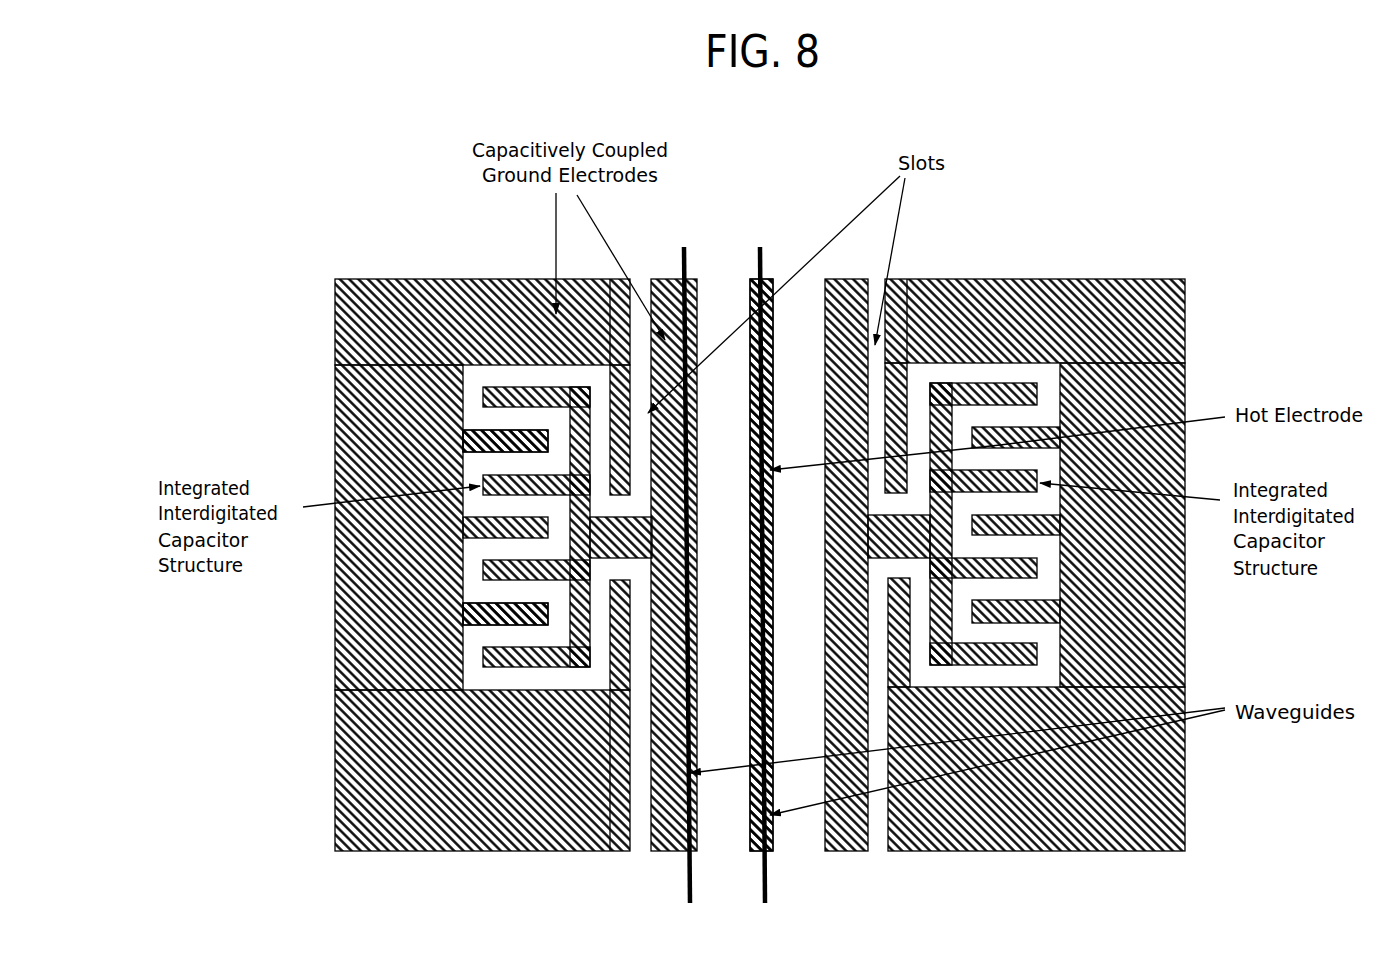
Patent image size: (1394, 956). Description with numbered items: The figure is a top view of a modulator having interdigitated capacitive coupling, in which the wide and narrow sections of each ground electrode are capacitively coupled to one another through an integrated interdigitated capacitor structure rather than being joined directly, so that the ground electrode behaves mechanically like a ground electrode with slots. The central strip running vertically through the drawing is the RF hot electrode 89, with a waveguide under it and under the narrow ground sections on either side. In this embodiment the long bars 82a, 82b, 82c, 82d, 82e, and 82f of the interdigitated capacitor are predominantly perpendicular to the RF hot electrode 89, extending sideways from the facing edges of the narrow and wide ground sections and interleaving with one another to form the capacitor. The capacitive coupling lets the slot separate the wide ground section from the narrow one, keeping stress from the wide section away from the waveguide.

The long bar 82a is at (495, 395).
The long bar 82b is at (520, 435).
The long bar 82c is at (505, 533).
The long bar 82d is at (520, 627).
The long bar 82e is at (563, 650).
The long bar 82f is at (530, 575).
The RF hot electrode 89 is at (767, 282).